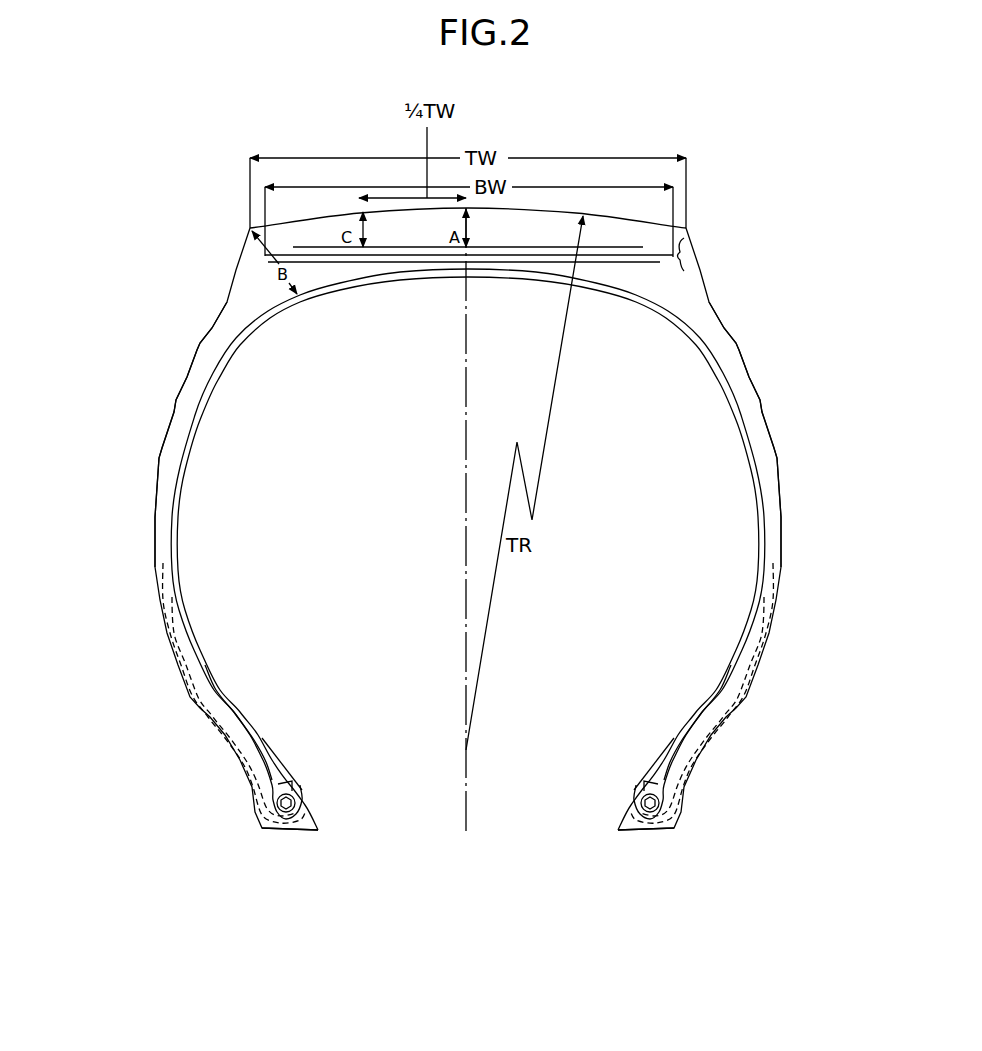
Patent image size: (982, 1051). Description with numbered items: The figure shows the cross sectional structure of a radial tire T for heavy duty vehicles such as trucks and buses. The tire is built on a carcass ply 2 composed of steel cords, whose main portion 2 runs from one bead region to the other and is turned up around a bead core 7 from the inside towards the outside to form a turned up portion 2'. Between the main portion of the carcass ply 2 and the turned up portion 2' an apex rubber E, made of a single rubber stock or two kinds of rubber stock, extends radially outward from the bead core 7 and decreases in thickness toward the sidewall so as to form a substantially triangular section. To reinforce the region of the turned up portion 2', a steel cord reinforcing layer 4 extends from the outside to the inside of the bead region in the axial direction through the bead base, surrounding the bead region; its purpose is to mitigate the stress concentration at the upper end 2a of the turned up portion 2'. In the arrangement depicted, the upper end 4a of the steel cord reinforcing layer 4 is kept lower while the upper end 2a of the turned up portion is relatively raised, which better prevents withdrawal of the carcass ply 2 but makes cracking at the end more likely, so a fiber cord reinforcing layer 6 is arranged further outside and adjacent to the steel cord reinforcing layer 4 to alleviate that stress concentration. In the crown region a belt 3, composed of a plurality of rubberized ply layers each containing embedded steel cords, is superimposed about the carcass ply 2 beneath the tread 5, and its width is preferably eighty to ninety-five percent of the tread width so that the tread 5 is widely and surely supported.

The radial tire T is at (202, 292).
The carcass ply 2 is at (463, 434).
The turned up portion of the carcass ply 2' is at (468, 544).
The upper end of the turned up portion 2a is at (183, 638).
The belt 3 is at (693, 262).
The steel cord reinforcing layer 4 is at (300, 830).
The upper end of the steel cord reinforcing layer 4a is at (218, 705).
The tread 5 is at (647, 232).
The fiber cord reinforcing layer 6 is at (190, 668).
The bead core 7 is at (286, 812).
The apex rubber E is at (270, 758).